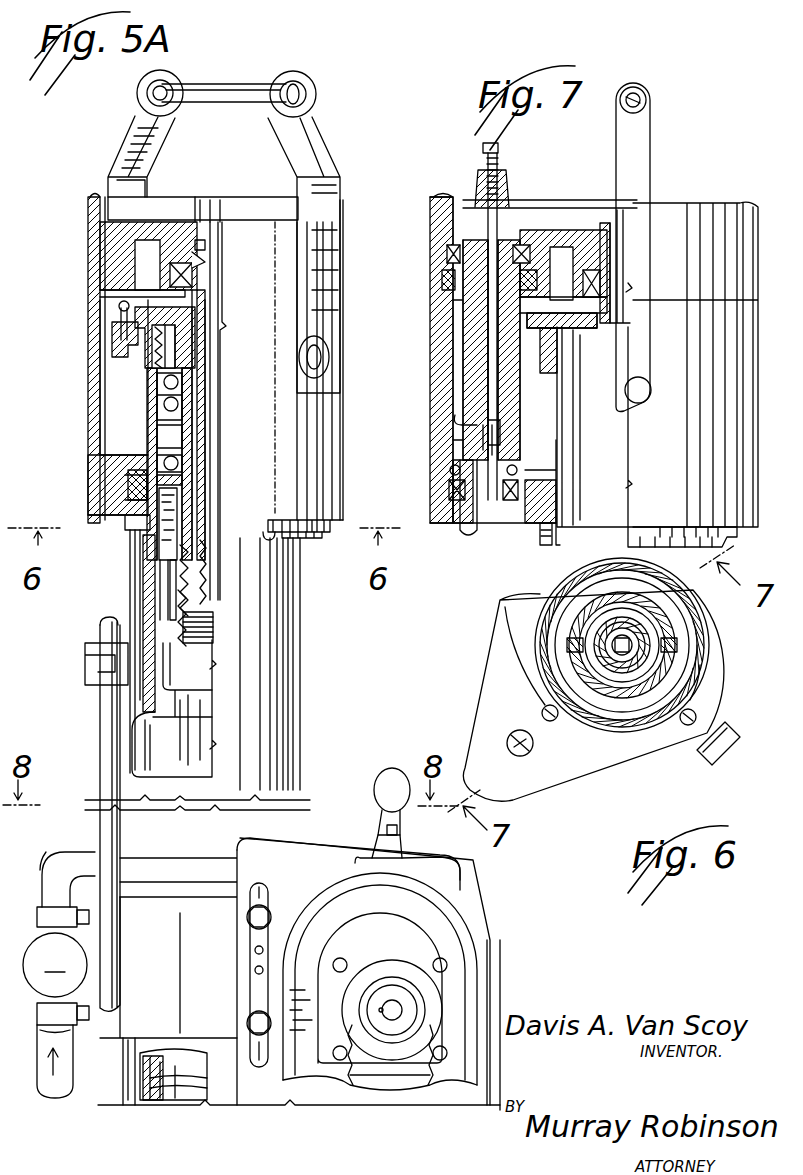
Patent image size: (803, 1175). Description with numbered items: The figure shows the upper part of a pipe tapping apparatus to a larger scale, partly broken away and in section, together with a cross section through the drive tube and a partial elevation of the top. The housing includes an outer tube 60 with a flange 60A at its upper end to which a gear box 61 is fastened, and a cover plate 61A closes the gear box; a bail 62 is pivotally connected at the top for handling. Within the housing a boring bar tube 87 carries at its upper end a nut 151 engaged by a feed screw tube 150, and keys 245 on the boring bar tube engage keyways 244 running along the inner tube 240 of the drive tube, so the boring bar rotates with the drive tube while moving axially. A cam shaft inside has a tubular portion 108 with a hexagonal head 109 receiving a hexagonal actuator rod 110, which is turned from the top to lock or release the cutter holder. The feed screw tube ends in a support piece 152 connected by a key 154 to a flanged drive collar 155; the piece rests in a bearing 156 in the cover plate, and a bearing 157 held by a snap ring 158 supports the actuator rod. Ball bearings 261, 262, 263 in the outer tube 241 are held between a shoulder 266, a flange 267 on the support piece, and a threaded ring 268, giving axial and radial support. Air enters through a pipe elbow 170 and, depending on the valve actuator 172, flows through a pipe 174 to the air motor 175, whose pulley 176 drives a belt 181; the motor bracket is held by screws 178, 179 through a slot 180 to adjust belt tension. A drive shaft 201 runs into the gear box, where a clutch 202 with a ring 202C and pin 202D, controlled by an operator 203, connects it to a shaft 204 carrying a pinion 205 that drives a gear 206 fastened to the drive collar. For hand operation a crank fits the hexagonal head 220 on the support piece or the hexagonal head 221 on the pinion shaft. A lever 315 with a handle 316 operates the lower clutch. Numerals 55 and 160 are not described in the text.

In FIG. 7, the housing member 55 is at (592, 320).
In FIG. 5A, the outer tube 60 is at (168, 585).
In FIG. 7, the outer tube 60 is at (556, 545).
In FIG. 6, the outer tube 60 is at (520, 603).
In FIG. 5A, the flange 60A is at (118, 530).
In FIG. 7, the flange 60A is at (540, 545).
In FIG. 6, the flange 60A is at (522, 630).
In FIG. 5A, the gear box 61 is at (90, 380).
In FIG. 7, the gear box 61 is at (433, 488).
In FIG. 5A, the cover plate 61A is at (88, 240).
In FIG. 5A, the bail 62 is at (120, 160).
In FIG. 7, the bail 62 is at (656, 163).
In FIG. 6, the bail 62 is at (732, 738).
In FIG. 5A, the boring bar tube 87 is at (180, 600).
In FIG. 6, the boring bar tube 87 is at (660, 690).
In FIG. 6, the tubular portion 108 is at (615, 665).
In FIG. 5A, the head 109 is at (210, 510).
In FIG. 5A, the actuator rod 110 is at (205, 430).
In FIG. 6, the actuator rod 110 is at (610, 655).
In FIG. 5A, the feed screw tube 150 is at (185, 625).
In FIG. 6, the feed screw tube 150 is at (625, 675).
In FIG. 5A, the nut 151 is at (190, 495).
In FIG. 5A, the bearing and key support piece 152 is at (185, 400).
In FIG. 5A, the key 154 is at (195, 352).
In FIG. 5A, the flanged drive collar 155 is at (183, 462).
In FIG. 5A, the bearing 156 is at (192, 280).
In FIG. 5A, the bearing 157 is at (200, 258).
In FIG. 5A, the snap ring 158 is at (203, 243).
In FIG. 6, the screw 160 is at (512, 738).
In FIG. 5A, the pipe elbow 170 is at (65, 1100).
In FIG. 5A, the valve actuator 172 is at (59, 938).
In FIG. 5A, the pipe 174 is at (200, 876).
In FIG. 5A, the air motor 175 is at (362, 970).
In FIG. 5A, the pulley 176 is at (390, 980).
In FIG. 5A, the screw 178 is at (275, 905).
In FIG. 5A, the screw 179 is at (248, 1022).
In FIG. 5A, the slot 180 is at (255, 950).
In FIG. 5A, the belt 181 is at (350, 1045).
In FIG. 5A, the drive shaft 201 is at (118, 320).
In FIG. 7, the drive shaft 201 is at (468, 535).
In FIG. 7, the clutch 202 is at (445, 380).
In FIG. 7, the ring 202C is at (460, 420).
In FIG. 7, the pin 202D is at (503, 435).
In FIG. 7, the operator 203 is at (474, 185).
In FIG. 7, the shaft 204 is at (452, 312).
In FIG. 7, the pinion 205 is at (448, 345).
In FIG. 5A, the gear 206 is at (112, 342).
In FIG. 7, the gear 206 is at (560, 358).
In FIG. 5A, the hexagonal head 220 is at (188, 200).
In FIG. 7, the hexagonal head 220 is at (608, 212).
In FIG. 7, the hexagonal head 221 is at (518, 212).
In FIG. 6, the inner tube 240 is at (690, 670).
In FIG. 6, the outer tube 241 is at (665, 630).
In FIG. 5A, the keyways 244 is at (160, 572).
In FIG. 6, the keyways 244 is at (577, 640).
In FIG. 5A, the keys 245 is at (200, 548).
In FIG. 6, the keys 245 is at (567, 645).
In FIG. 5A, the ball bearing 261 is at (185, 480).
In FIG. 5A, the ball bearing 262 is at (185, 412).
In FIG. 5A, the ball bearing 263 is at (180, 385).
In FIG. 5A, the shoulder 266 is at (128, 478).
In FIG. 5A, the flange 267 is at (157, 435).
In FIG. 5A, the threaded ring 268 is at (175, 332).
In FIG. 5A, the lever 315 is at (375, 838).
In FIG. 5A, the handle 316 is at (375, 778).